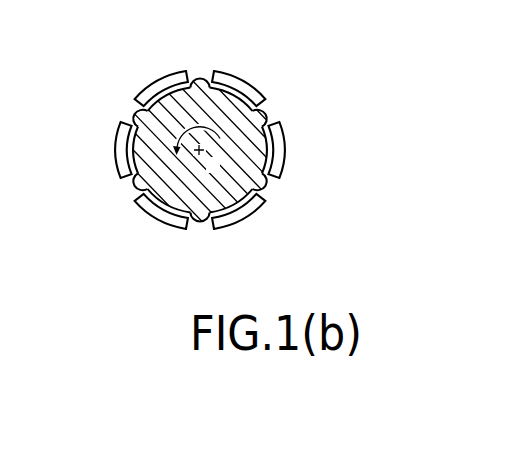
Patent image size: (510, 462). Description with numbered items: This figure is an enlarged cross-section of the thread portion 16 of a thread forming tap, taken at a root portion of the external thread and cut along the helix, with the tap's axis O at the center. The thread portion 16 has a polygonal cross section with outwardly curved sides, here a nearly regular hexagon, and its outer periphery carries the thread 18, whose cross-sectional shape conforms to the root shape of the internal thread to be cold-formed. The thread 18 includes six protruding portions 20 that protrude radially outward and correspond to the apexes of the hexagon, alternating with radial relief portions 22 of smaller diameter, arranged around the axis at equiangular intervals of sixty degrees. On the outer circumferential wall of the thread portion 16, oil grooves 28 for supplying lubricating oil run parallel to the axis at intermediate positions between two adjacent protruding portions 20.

The thread portion 16 is at (227, 138).
The thread 18 is at (128, 166).
The protruding portion 20 is at (158, 75).
The radial relief portion 22 is at (178, 67).
The oil groove 28 is at (143, 114).